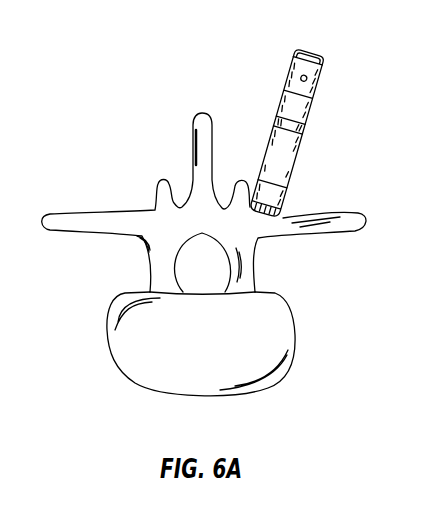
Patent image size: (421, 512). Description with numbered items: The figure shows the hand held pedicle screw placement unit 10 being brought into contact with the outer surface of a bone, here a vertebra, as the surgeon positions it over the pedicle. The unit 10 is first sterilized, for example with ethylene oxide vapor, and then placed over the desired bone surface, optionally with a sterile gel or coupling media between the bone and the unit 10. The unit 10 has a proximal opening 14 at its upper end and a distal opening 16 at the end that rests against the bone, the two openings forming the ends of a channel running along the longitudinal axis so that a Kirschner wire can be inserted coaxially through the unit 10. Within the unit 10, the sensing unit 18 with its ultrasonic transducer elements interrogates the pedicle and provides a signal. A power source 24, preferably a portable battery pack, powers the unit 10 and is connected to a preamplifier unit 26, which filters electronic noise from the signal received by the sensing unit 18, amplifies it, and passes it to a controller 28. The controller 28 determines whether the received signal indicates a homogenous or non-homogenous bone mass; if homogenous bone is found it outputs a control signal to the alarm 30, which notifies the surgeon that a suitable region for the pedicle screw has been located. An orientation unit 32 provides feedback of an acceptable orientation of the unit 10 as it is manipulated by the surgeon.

The pedicle screw placement unit 10 is at (247, 56).
The proximal opening 14 is at (312, 52).
The distal opening 16 is at (262, 238).
The sensing unit 18 is at (282, 220).
The power source 24 is at (299, 157).
The preamplifier unit 26 is at (285, 201).
The controller 28 is at (306, 121).
The alarm 30 is at (310, 78).
The orientation unit 32 is at (277, 117).